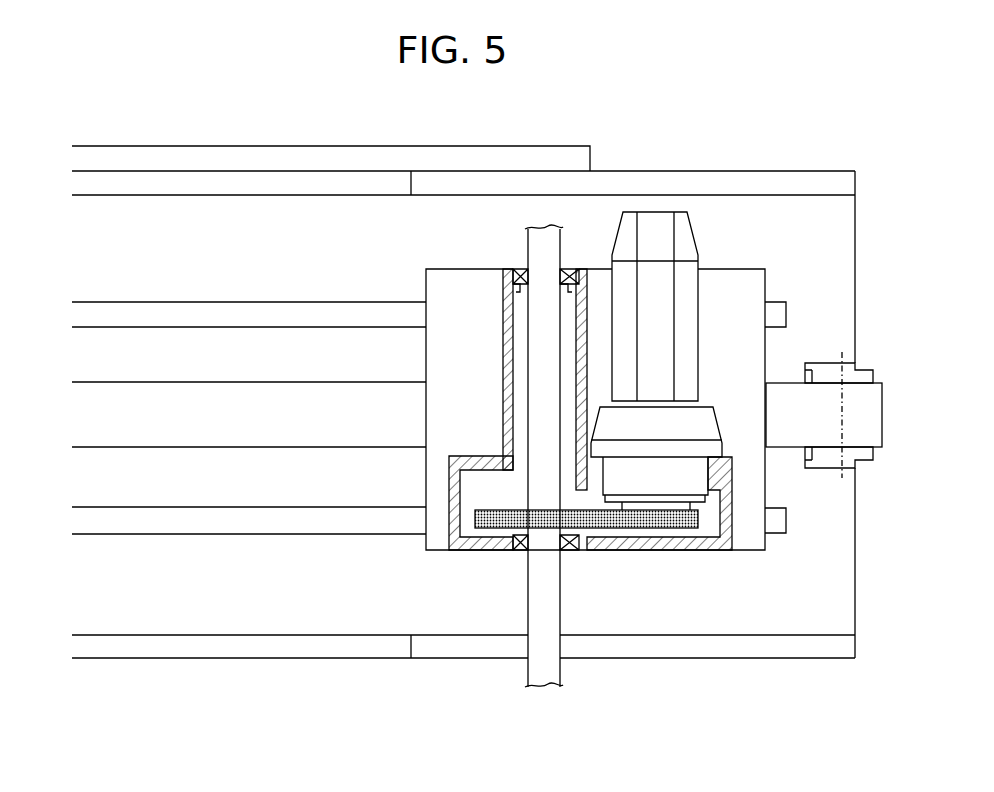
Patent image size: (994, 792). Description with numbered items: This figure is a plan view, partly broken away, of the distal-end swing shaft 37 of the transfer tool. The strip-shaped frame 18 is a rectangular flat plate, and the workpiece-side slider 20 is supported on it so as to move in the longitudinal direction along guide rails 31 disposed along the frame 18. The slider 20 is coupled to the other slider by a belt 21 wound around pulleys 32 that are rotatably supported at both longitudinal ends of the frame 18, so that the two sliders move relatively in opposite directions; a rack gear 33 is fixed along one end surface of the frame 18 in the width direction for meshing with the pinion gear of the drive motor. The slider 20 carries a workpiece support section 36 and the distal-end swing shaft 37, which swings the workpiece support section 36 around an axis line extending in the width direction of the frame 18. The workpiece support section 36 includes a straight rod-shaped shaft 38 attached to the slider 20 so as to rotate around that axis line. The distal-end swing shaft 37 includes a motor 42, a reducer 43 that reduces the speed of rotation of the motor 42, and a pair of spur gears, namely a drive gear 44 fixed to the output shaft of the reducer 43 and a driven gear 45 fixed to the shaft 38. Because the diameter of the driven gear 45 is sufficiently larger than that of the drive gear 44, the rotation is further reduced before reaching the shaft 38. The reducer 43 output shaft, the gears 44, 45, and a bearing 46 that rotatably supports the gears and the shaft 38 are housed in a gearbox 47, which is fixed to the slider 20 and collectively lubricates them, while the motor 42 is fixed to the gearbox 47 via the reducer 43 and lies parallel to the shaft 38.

The frame 18 is at (318, 238).
The slider 20 is at (426, 470).
The belt 21 is at (183, 405).
The guide rails 31 is at (172, 306).
The pulleys 32 is at (862, 366).
The rack gear 33 is at (200, 145).
The workpiece support section 36 is at (566, 619).
The distal-end swing shaft 37 is at (701, 554).
The shaft 38 is at (562, 577).
The motor 42 is at (700, 235).
The reducer 43 is at (718, 408).
The drive gear 44 is at (680, 551).
The driven gear 45 is at (498, 508).
The bearing 46 is at (522, 553).
The gearbox 47 is at (447, 525).